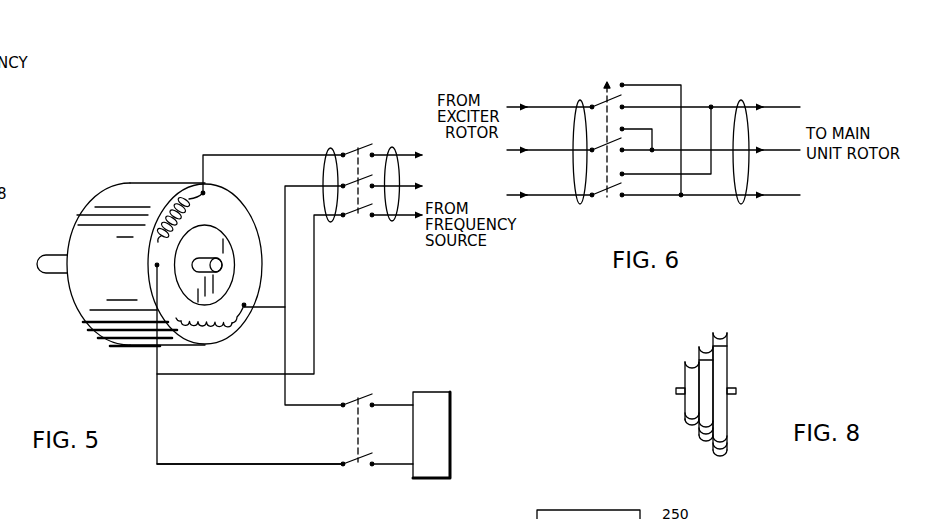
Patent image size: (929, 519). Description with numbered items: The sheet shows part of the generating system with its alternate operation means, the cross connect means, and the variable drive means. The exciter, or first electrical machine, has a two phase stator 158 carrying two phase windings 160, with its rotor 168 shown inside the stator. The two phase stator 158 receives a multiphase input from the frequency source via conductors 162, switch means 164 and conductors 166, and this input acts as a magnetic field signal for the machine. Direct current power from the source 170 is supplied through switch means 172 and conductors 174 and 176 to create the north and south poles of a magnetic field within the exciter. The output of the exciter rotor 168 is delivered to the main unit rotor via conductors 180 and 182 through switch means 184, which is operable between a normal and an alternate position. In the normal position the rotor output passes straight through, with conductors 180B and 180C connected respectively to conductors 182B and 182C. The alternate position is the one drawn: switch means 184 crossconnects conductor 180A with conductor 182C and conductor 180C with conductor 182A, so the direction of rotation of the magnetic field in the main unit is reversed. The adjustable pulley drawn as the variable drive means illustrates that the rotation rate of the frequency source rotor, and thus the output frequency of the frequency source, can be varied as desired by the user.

In FIG. 5, the two phase stator 158 is at (102, 320).
In FIG. 5, the two phase windings 160 is at (170, 199).
In FIG. 5, the conductors 162 is at (394, 146).
In FIG. 5, the switch means 164 is at (363, 218).
In FIG. 5, the conductors 166 is at (331, 150).
In FIG. 5, the rotor 168 is at (227, 283).
In FIG. 5, the direct current source 170 is at (450, 472).
In FIG. 5, the switch means 172 is at (358, 466).
In FIG. 5, the conductor 174 is at (325, 405).
In FIG. 5, the conductor 176 is at (261, 466).
In FIG. 6, the conductors 180 is at (584, 203).
In FIG. 6, the conductor 180A is at (568, 83).
In FIG. 6, the conductor 180B is at (566, 128).
In FIG. 6, the conductor 180C is at (570, 194).
In FIG. 6, the conductors 182 is at (751, 203).
In FIG. 6, the conductor 182A is at (775, 107).
In FIG. 6, the conductor 182B is at (780, 150).
In FIG. 6, the conductor 182C is at (787, 195).
In FIG. 6, the switch means 184 is at (608, 83).